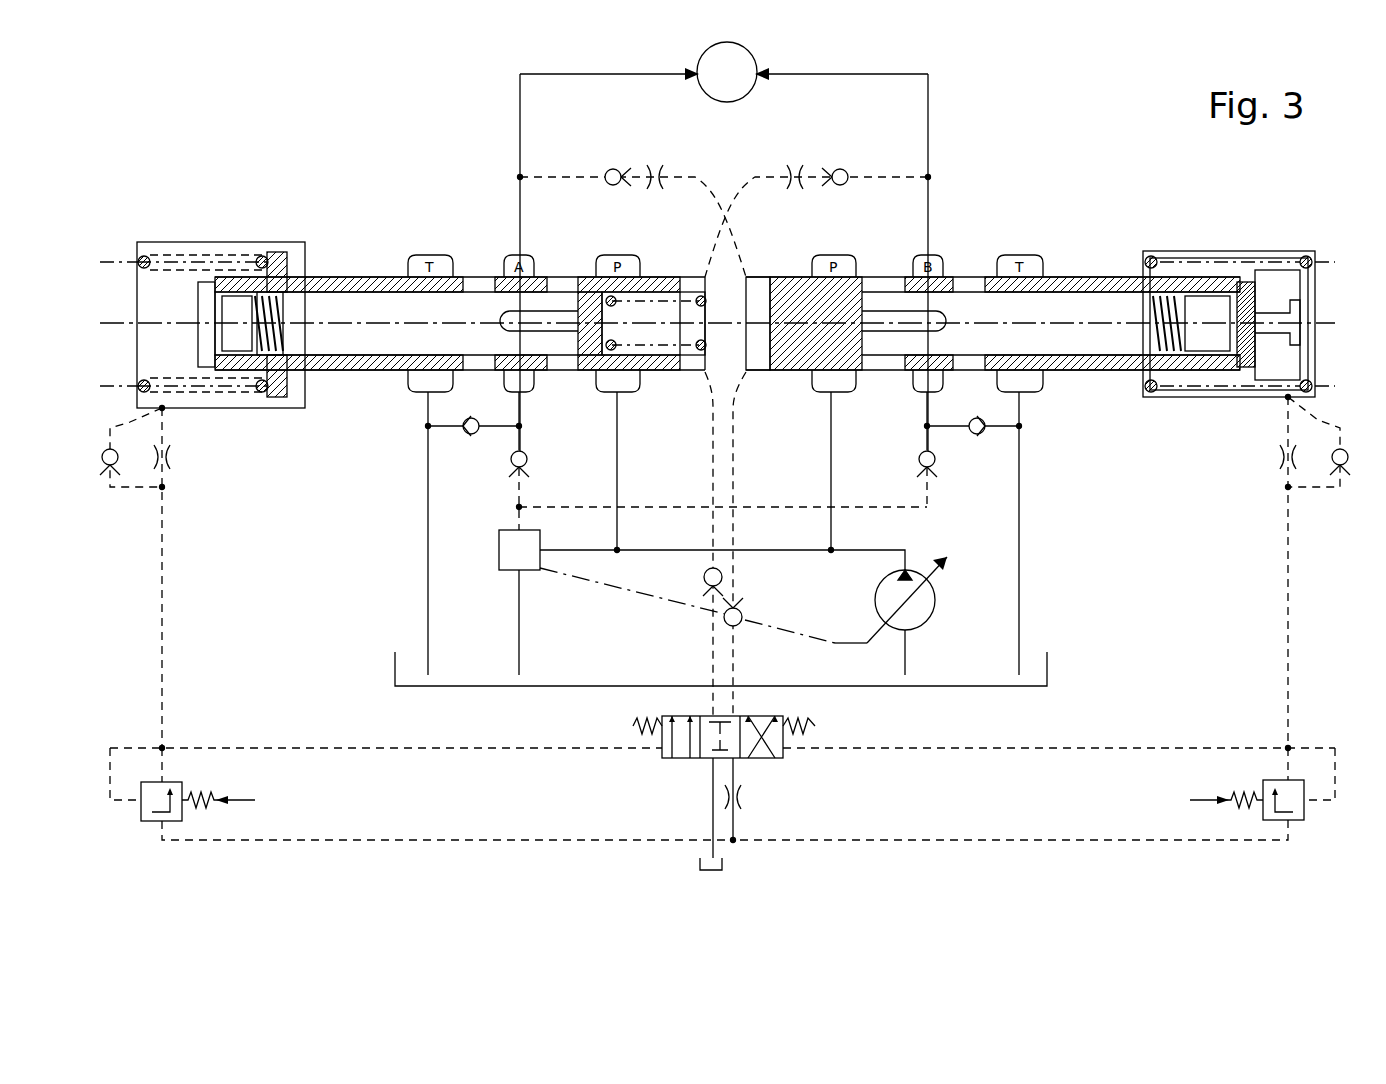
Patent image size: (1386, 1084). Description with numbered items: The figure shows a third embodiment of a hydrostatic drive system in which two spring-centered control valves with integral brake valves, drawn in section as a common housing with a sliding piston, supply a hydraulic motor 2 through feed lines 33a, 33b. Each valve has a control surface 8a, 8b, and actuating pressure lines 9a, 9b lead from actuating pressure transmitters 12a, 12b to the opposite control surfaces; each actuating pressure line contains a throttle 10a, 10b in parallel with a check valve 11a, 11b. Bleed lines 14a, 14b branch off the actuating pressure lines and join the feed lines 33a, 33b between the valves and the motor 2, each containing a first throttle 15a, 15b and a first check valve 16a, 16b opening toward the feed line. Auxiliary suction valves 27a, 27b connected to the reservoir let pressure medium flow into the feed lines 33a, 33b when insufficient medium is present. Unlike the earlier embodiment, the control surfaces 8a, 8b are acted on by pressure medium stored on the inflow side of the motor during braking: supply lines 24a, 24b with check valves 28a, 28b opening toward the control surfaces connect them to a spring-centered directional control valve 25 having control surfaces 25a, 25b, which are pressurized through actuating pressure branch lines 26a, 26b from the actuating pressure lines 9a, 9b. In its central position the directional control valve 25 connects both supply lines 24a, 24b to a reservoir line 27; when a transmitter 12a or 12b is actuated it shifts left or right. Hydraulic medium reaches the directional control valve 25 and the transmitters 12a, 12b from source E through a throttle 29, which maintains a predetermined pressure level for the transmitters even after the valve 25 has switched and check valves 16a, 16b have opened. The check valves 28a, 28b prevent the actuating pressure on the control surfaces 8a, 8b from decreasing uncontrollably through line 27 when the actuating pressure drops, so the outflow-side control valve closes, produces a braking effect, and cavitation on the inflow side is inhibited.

The hydraulic motor 2 is at (702, 92).
The control surface 8a is at (695, 272).
The control surface 8b is at (768, 296).
The actuating pressure line 9a is at (162, 605).
The actuating pressure line 9b is at (1290, 605).
The throttle 10a is at (170, 458).
The throttle 10b is at (1280, 458).
The check valve 11a is at (103, 468).
The check valve 11b is at (1348, 468).
The actuating pressure transmitter 12a is at (145, 822).
The actuating pressure transmitter 12b is at (1300, 822).
The bleed line 14a is at (576, 185).
The bleed line 14b is at (880, 185).
The first throttle 15a is at (655, 172).
The first throttle 15b is at (795, 172).
The first check valve 16a is at (605, 170).
The first check valve 16b is at (845, 170).
The supply line 24a is at (712, 648).
The supply line 24b is at (748, 648).
The directional control valve 25 is at (782, 712).
The control surface 25a is at (665, 760).
The control surface 25b is at (780, 760).
The actuating pressure branch line 26a is at (358, 748).
The actuating pressure branch line 26b is at (1080, 748).
The reservoir line 27 is at (711, 822).
The auxiliary suction valve 27a is at (470, 438).
The auxiliary suction valve 27b is at (983, 438).
The check valve 28a is at (703, 583).
The check valve 28b is at (742, 610).
The throttle 29 is at (742, 800).
The feed line 33a is at (519, 177).
The feed line 33b is at (929, 168).